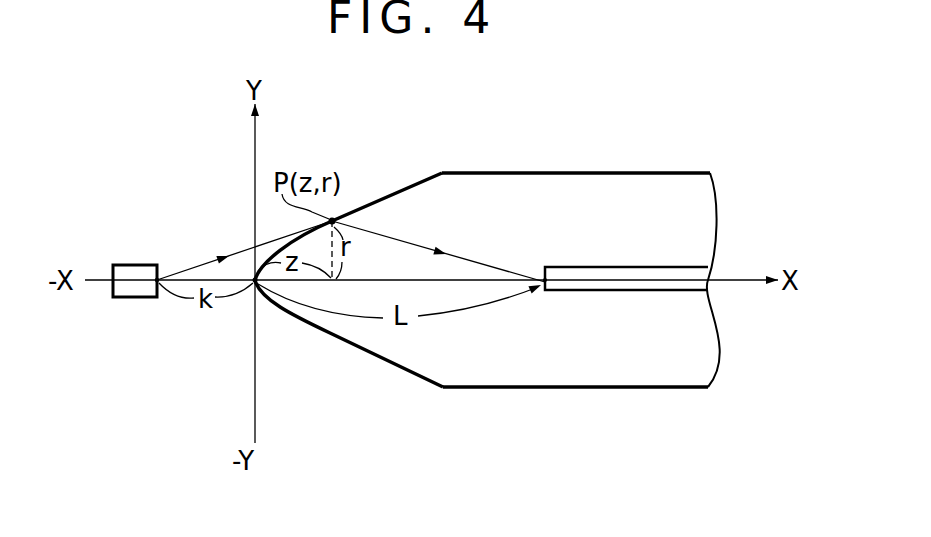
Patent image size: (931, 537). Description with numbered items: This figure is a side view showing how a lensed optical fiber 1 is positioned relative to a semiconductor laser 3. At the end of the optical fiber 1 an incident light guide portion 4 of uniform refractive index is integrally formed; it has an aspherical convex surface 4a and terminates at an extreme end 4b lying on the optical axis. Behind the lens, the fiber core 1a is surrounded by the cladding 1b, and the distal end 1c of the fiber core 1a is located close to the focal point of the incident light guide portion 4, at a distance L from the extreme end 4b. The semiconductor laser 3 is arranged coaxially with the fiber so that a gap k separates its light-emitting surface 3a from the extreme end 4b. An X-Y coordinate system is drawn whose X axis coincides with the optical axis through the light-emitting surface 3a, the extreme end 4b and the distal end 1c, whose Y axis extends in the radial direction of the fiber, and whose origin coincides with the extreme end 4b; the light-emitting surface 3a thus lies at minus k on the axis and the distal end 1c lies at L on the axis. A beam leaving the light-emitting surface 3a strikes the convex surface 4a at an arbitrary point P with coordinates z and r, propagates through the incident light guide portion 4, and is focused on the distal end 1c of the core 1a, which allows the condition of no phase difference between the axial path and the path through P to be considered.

The optical fiber 1 is at (624, 302).
The fiber core 1a is at (687, 272).
The cladding 1b is at (688, 200).
The distal end of fiber core 1c is at (536, 296).
The semiconductor laser 3 is at (123, 298).
The light-emitting surface 3a is at (160, 266).
The incident light guide portion 4 is at (310, 232).
The aspherical convex surface 4a is at (389, 197).
The extreme end of incident light guide portion 4b is at (246, 295).